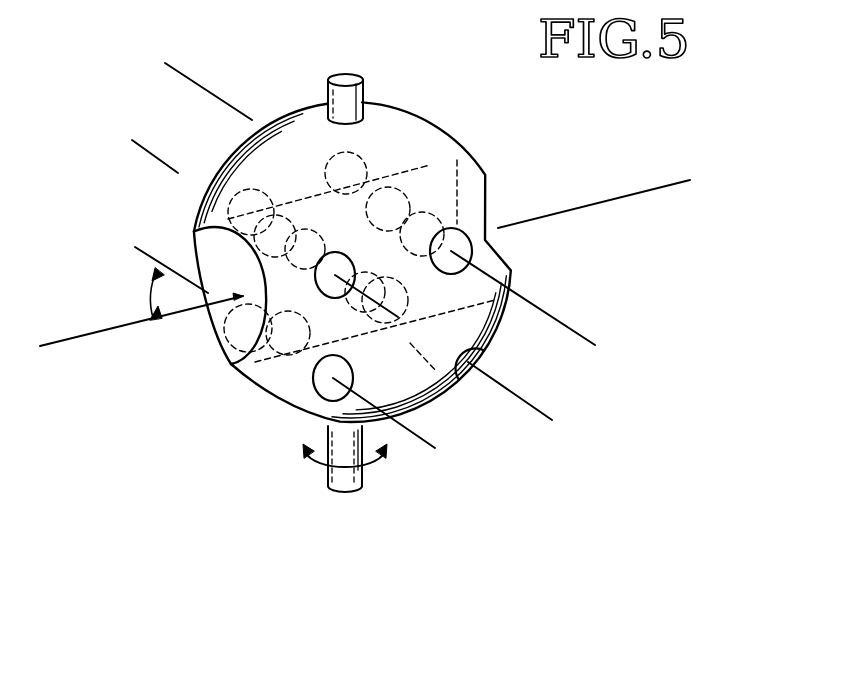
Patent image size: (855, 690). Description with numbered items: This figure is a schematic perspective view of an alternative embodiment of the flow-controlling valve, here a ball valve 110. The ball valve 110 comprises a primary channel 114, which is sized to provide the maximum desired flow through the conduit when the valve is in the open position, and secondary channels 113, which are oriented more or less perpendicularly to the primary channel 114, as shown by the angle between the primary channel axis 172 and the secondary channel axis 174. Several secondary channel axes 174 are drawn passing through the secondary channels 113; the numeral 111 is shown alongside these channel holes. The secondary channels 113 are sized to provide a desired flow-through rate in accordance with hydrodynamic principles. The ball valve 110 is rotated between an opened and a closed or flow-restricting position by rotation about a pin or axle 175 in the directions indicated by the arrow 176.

The ball valve 110 is at (417, 117).
The pin receiving holes 111 is at (318, 398).
The secondary channels 113 is at (490, 222).
The primary channel 114 is at (228, 366).
The primary channel axis 172 is at (660, 189).
The secondary channel axis 174 is at (211, 93).
The pin or axle 175 is at (346, 492).
The arrow 176 is at (384, 460).